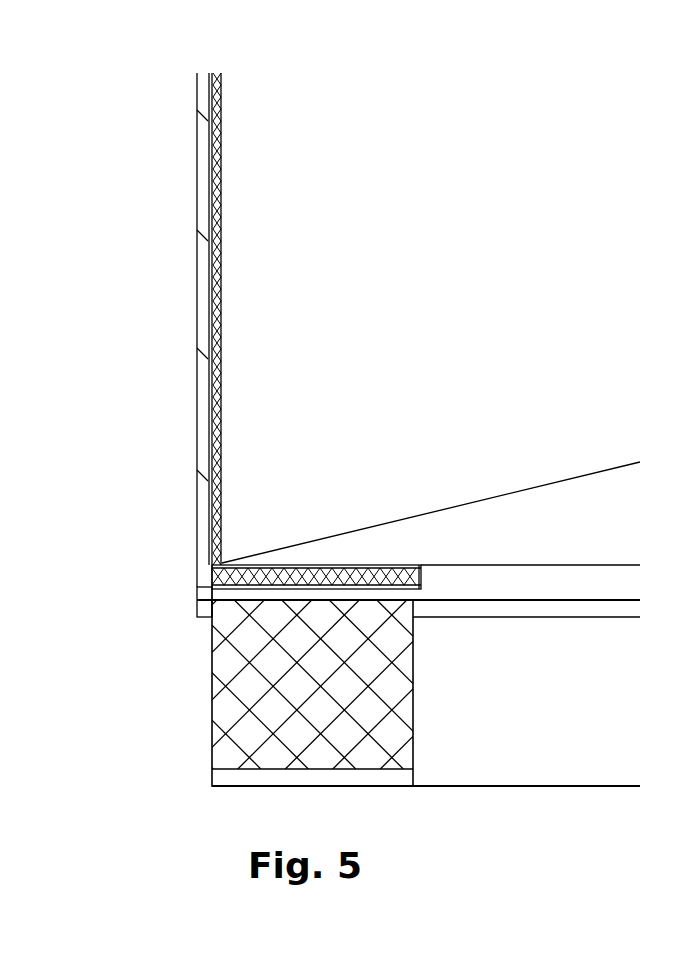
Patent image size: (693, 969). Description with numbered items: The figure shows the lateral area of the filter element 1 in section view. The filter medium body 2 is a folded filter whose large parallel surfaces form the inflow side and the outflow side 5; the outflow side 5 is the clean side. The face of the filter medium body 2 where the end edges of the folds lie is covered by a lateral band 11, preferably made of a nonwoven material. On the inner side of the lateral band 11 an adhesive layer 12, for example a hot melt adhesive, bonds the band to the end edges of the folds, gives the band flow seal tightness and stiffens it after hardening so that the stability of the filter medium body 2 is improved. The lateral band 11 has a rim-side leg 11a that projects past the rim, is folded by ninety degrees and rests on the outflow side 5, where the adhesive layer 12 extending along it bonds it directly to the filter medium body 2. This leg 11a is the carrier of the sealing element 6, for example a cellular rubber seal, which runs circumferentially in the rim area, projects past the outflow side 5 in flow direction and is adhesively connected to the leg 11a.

The filter element 1 is at (550, 88).
The filter medium body 2 is at (446, 343).
The outflow side 5 is at (537, 619).
The sealing element 6 is at (404, 710).
The lateral band 11 is at (197, 332).
The rim-side leg 11a is at (412, 593).
The adhesive layer 12 is at (214, 388).